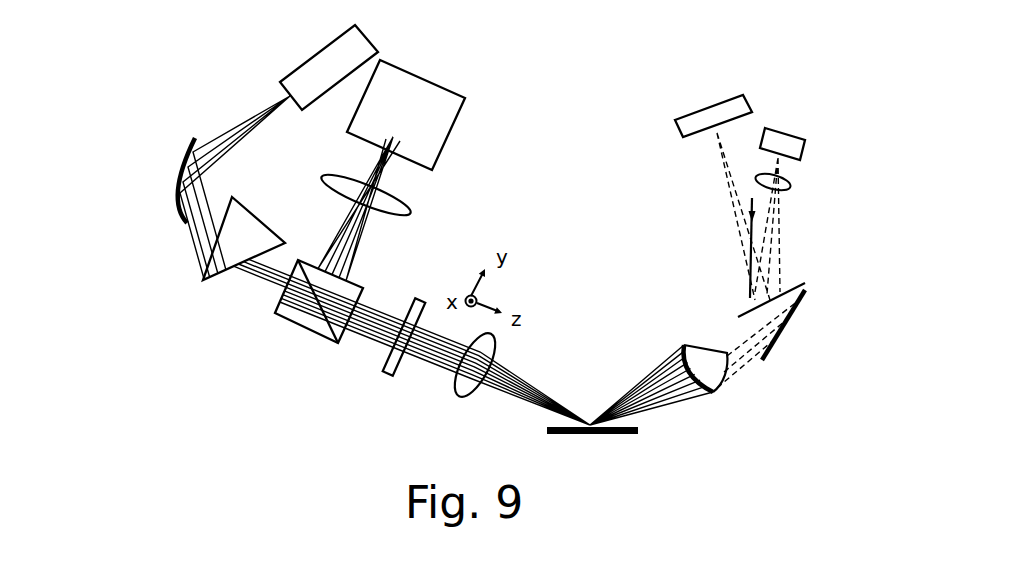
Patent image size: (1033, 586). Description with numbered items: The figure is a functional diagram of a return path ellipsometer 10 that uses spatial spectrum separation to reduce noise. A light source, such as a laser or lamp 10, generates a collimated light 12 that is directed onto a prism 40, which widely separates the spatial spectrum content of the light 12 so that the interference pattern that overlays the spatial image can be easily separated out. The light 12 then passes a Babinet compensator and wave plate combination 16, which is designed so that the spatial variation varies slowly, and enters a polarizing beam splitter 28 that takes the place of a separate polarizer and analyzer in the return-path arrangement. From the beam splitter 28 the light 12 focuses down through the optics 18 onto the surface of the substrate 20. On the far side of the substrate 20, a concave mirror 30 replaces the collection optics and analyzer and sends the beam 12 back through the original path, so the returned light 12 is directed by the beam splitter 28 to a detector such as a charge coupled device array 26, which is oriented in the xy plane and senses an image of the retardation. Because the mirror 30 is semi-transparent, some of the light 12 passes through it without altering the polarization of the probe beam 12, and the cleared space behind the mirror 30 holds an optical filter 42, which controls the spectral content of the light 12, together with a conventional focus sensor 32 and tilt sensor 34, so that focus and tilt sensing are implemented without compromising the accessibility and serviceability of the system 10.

The ellipsometer 10 is at (333, 37).
The collimated light 12 is at (263, 290).
The Babinet compensator 16 is at (390, 375).
The optics 18 is at (458, 384).
The substrate 20 is at (635, 438).
The charge coupled device array 26 is at (453, 143).
The polarizing beam splitter 28 is at (307, 333).
The concave mirror 30 is at (720, 378).
The focus sensor 32 is at (752, 103).
The tilt sensor 34 is at (806, 146).
The prism 40 is at (203, 283).
The optical filter 42 is at (792, 280).